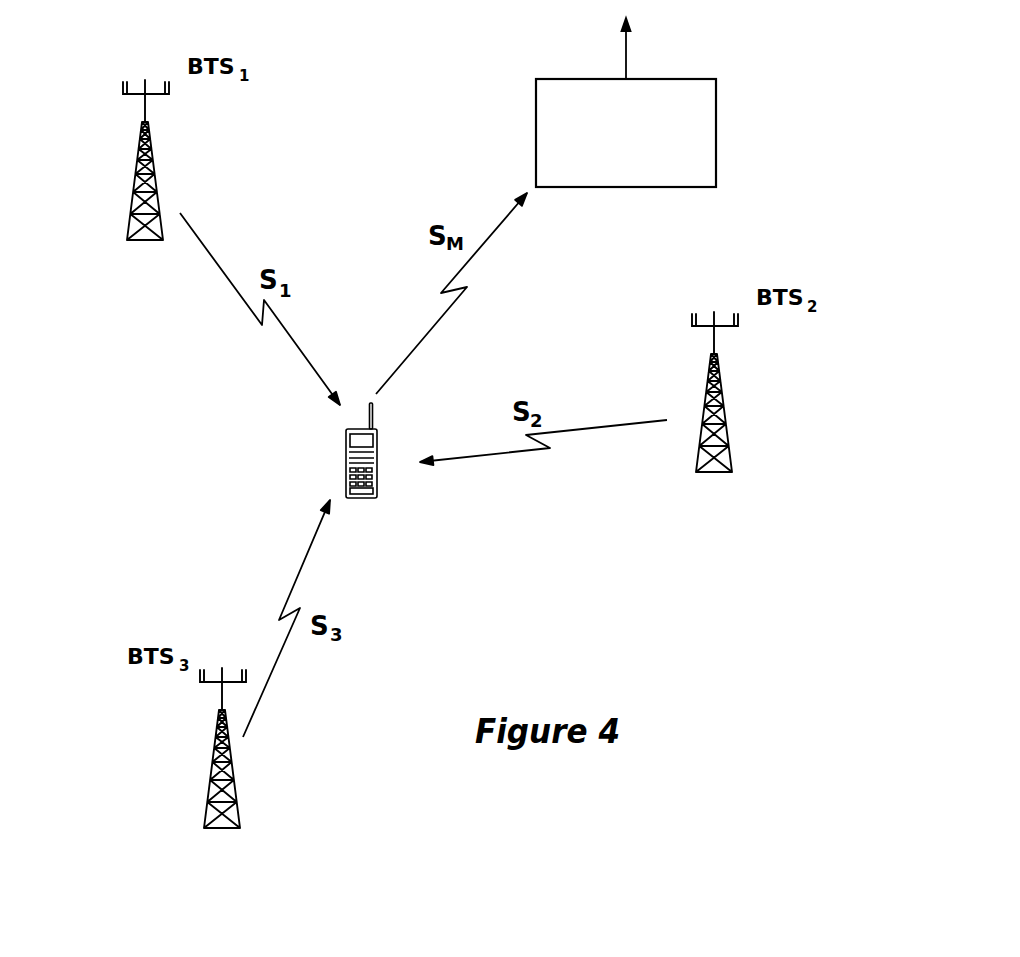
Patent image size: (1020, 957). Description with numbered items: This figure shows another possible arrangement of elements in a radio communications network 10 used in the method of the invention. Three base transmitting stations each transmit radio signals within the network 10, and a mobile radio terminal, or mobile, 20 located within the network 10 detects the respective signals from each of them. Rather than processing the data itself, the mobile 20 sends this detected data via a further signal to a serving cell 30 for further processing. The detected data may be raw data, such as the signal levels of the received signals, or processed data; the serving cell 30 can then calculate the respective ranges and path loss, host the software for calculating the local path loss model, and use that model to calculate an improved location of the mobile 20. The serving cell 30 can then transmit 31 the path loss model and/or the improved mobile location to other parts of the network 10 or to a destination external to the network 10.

The radio communications network 10 is at (212, 432).
The mobile radio terminal 20 is at (377, 480).
The serving cell 30 is at (698, 137).
The transmission 31 is at (627, 53).